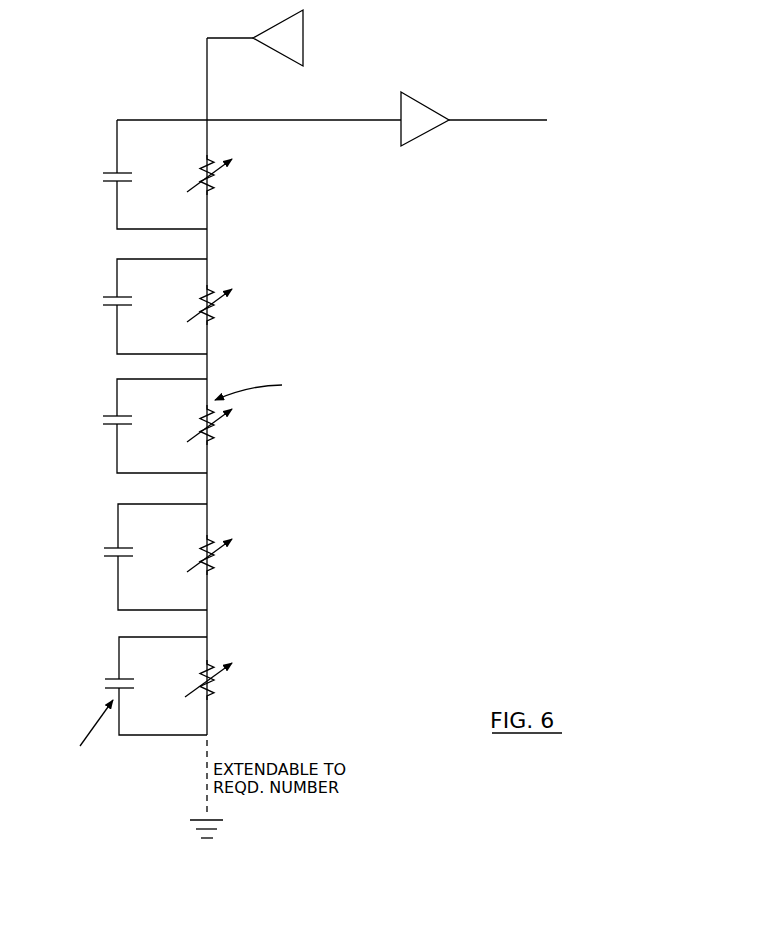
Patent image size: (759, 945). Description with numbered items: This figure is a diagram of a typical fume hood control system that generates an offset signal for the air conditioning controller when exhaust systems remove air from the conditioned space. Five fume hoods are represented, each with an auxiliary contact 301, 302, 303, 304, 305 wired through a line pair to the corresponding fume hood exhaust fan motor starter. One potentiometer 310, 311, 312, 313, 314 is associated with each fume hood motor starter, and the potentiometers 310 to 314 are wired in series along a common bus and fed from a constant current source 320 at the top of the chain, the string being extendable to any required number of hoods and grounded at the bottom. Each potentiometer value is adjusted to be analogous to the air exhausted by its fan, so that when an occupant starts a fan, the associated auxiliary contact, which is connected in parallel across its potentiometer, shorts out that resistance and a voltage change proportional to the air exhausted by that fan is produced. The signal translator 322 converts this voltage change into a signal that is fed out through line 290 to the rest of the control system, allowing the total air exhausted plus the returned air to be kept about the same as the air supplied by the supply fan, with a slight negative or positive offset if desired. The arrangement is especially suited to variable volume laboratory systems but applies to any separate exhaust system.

The constant current source 320 is at (354, 38).
The signal translator 322 is at (454, 140).
The line 290 is at (562, 119).
The auxiliary contact 301 is at (124, 174).
The auxiliary contact 302 is at (124, 306).
The auxiliary contact 303 is at (124, 426).
The auxiliary contact 304 is at (125, 557).
The auxiliary contact 305 is at (112, 744).
The potentiometer 310 is at (225, 175).
The potentiometer 311 is at (226, 305).
The potentiometer 312 is at (362, 421).
The potentiometer 313 is at (221, 558).
The potentiometer 314 is at (219, 681).